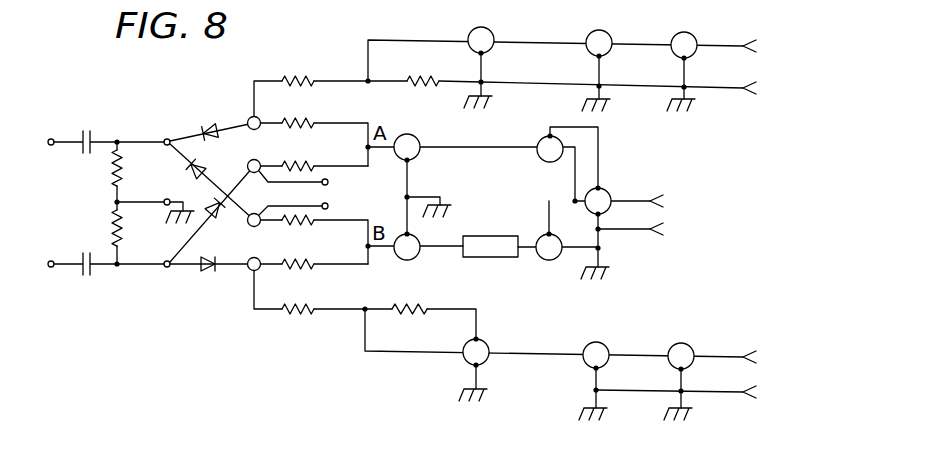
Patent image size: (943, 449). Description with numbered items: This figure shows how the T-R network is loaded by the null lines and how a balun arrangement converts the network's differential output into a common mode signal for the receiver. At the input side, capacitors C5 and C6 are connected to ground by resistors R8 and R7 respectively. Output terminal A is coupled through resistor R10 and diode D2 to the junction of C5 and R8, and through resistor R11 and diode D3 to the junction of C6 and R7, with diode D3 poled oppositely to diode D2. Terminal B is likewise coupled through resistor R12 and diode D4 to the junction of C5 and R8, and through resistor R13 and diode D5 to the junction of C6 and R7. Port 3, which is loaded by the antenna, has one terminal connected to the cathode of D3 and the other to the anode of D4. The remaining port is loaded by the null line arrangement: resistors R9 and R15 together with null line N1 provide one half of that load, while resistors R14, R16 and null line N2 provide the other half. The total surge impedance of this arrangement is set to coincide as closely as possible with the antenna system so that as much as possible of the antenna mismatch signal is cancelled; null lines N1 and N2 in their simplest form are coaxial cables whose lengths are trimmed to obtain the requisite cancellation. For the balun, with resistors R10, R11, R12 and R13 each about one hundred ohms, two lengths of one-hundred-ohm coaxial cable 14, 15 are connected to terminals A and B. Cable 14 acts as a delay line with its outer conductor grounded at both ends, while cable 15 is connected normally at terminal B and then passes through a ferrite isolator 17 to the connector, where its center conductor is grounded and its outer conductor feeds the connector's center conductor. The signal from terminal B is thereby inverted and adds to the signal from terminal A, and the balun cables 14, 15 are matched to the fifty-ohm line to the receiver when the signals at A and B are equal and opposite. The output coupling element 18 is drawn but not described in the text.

The cable 14 is at (465, 148).
The cable 15 is at (433, 250).
The ferrite isolator 17 is at (490, 235).
The output coupling 18 is at (657, 195).
The port 3 is at (323, 194).
The capacitor C5 is at (106, 129).
The capacitor C6 is at (106, 276).
The resistor R7 is at (131, 233).
The resistor R8 is at (131, 172).
The resistor R9 is at (330, 88).
The resistor R10 is at (311, 130).
The resistor R11 is at (311, 154).
The resistor R12 is at (311, 239).
The resistor R13 is at (311, 277).
The resistor R14 is at (323, 302).
The resistor R15 is at (444, 69).
The resistor R16 is at (434, 316).
The diode D2 is at (212, 120).
The diode D3 is at (212, 182).
The diode D4 is at (212, 214).
The diode D5 is at (212, 278).
The null line N1 is at (621, 69).
The null line N2 is at (618, 364).